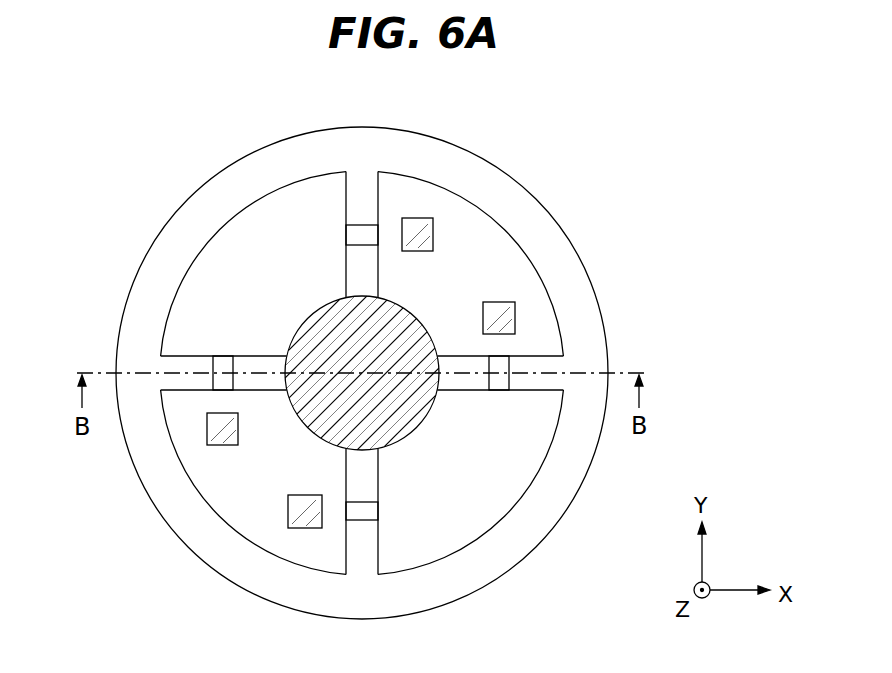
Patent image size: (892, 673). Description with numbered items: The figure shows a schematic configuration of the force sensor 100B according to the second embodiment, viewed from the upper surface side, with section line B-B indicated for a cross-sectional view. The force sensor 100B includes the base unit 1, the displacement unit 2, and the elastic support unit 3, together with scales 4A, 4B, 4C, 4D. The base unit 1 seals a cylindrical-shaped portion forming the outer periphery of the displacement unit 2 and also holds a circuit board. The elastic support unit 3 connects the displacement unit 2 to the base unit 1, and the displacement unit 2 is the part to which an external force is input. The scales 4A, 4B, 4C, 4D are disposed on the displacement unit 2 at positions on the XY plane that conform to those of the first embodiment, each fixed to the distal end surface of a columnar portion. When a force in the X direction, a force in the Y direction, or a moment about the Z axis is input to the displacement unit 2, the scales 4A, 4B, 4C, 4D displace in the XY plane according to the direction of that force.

The force sensor 100B is at (395, 92).
The base unit 1 is at (168, 238).
The displacement unit 2 is at (418, 428).
The elastic support unit 3 is at (346, 214).
The scale 4A is at (513, 318).
The scale 4B is at (207, 440).
The scale 4C is at (425, 223).
The scale 4D is at (307, 525).